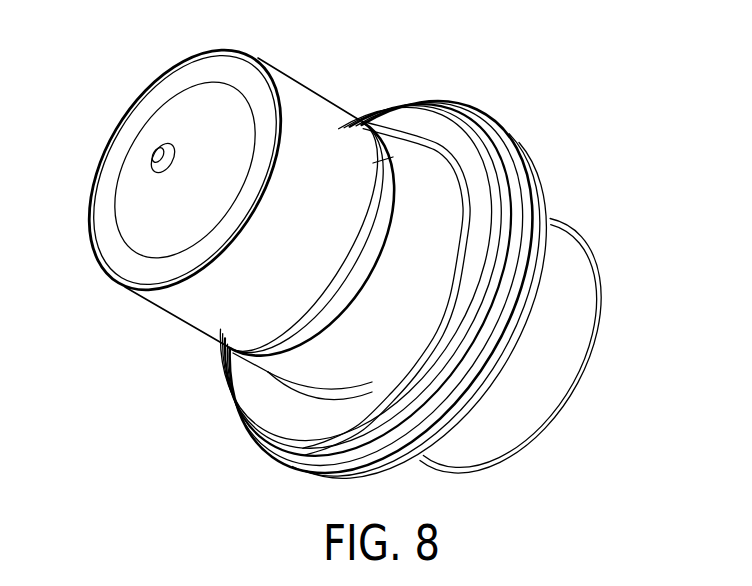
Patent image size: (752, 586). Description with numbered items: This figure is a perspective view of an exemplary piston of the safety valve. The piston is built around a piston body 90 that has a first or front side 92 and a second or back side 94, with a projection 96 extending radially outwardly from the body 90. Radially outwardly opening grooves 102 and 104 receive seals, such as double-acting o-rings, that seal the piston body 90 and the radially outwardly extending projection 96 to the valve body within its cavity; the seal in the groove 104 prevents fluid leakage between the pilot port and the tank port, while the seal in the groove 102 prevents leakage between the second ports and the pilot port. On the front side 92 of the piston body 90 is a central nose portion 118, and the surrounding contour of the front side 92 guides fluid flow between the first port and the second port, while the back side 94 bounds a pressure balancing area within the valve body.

The piston body 90 is at (330, 100).
The front side 92 is at (263, 64).
The back side 94 is at (600, 338).
The projection 96 is at (517, 141).
The groove 102 is at (393, 157).
The groove 104 is at (517, 243).
The central nose portion 118 is at (158, 150).